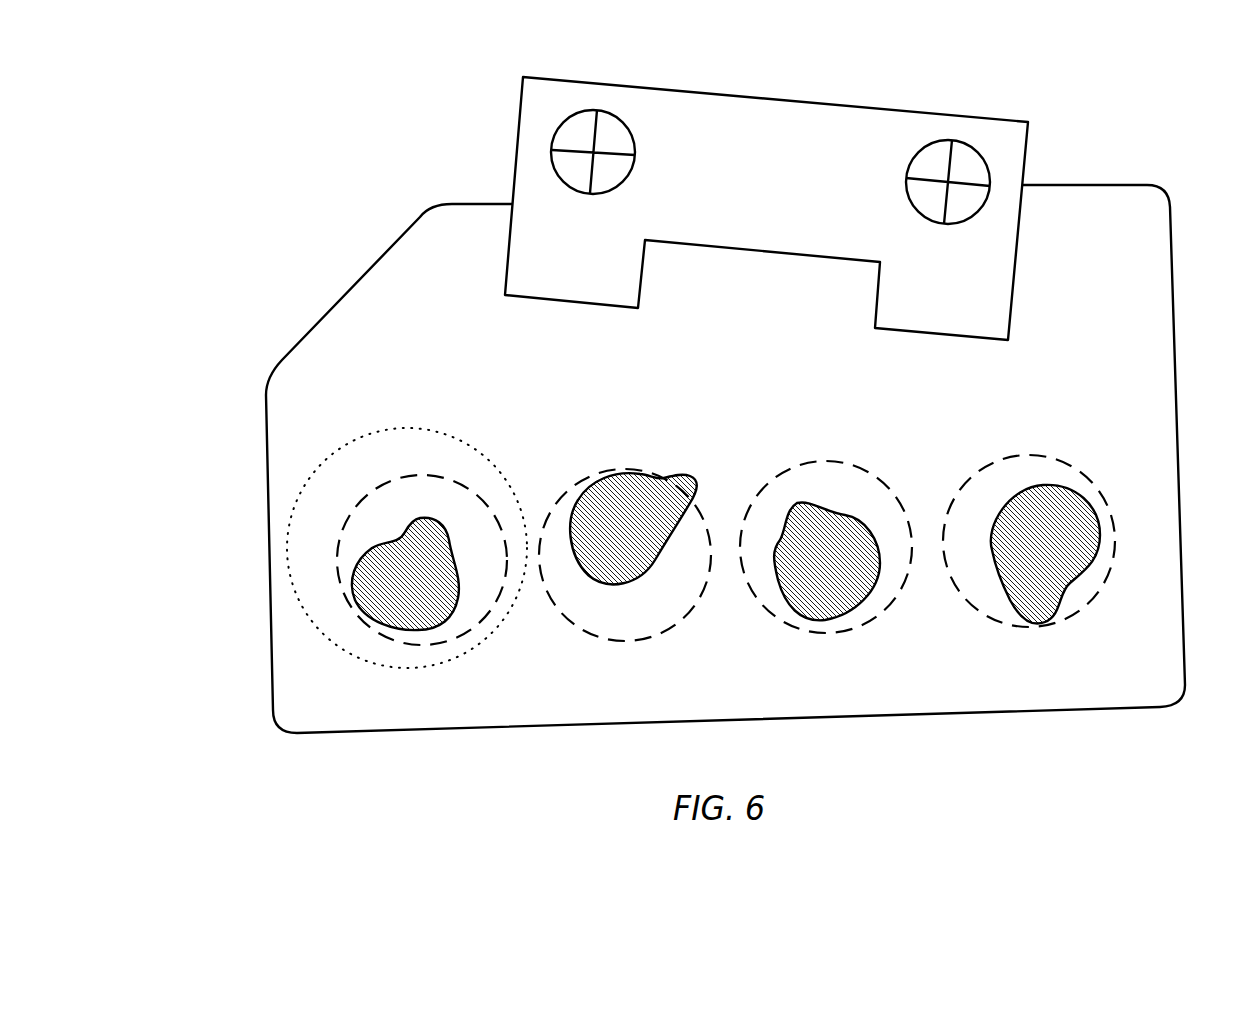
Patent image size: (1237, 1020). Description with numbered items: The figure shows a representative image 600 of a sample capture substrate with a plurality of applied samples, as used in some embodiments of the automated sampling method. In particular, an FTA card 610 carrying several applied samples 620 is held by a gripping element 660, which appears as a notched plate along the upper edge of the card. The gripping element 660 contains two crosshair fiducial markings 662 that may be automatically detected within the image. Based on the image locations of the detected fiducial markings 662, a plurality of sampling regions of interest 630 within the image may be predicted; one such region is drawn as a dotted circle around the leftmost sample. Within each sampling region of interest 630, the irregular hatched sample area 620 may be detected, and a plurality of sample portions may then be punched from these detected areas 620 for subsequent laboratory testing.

The representative image 600 is at (319, 146).
The FTA card 610 is at (1177, 352).
The applied samples 620 is at (683, 475).
The sampling regions of interest 630 is at (509, 482).
The gripping element 660 is at (793, 100).
The crosshair fiducial markings 662 is at (630, 178).